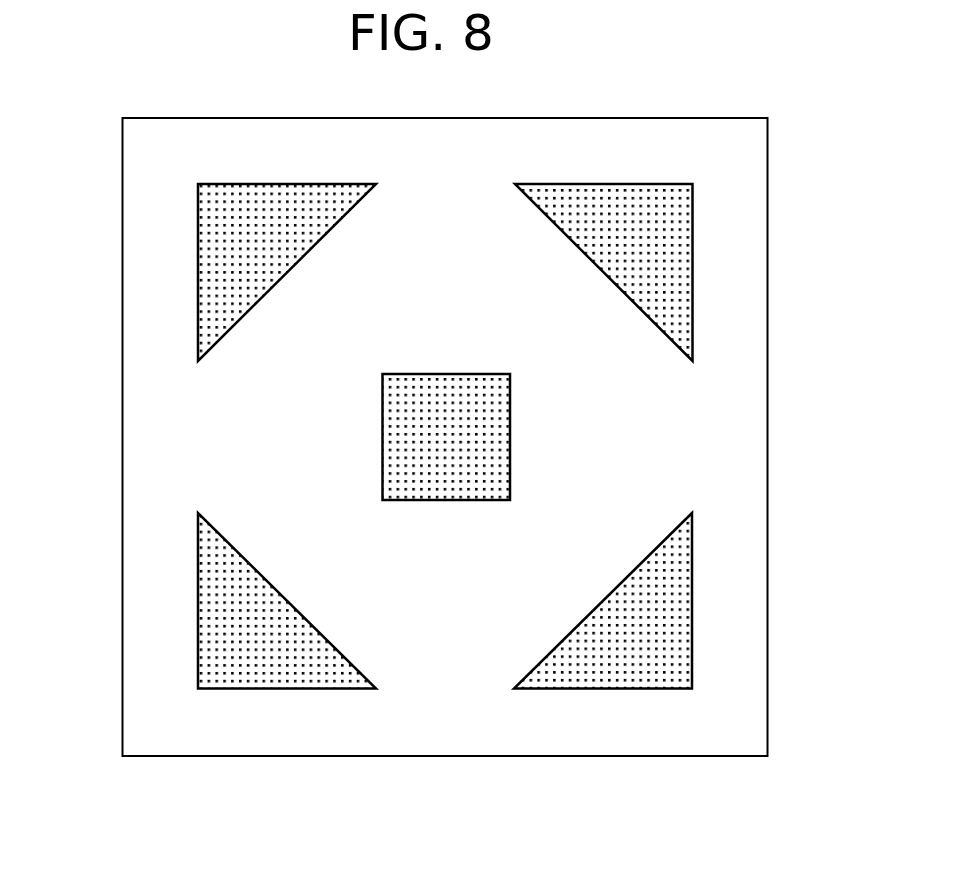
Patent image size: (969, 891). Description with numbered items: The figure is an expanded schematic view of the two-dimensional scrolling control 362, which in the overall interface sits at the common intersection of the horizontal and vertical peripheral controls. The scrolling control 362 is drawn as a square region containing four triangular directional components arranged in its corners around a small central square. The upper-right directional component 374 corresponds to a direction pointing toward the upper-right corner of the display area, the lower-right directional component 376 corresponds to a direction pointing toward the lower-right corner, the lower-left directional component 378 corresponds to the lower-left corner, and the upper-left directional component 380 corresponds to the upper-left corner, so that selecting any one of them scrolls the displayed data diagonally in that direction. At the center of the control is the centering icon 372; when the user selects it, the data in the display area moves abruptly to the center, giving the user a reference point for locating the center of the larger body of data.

The two-dimensional scrolling control 362 is at (708, 83).
The centering icon 372 is at (490, 432).
The upper-right directional component 374 is at (678, 262).
The lower-right directional component 376 is at (642, 633).
The lower-left directional component 378 is at (263, 665).
The upper-left directional component 380 is at (222, 243).